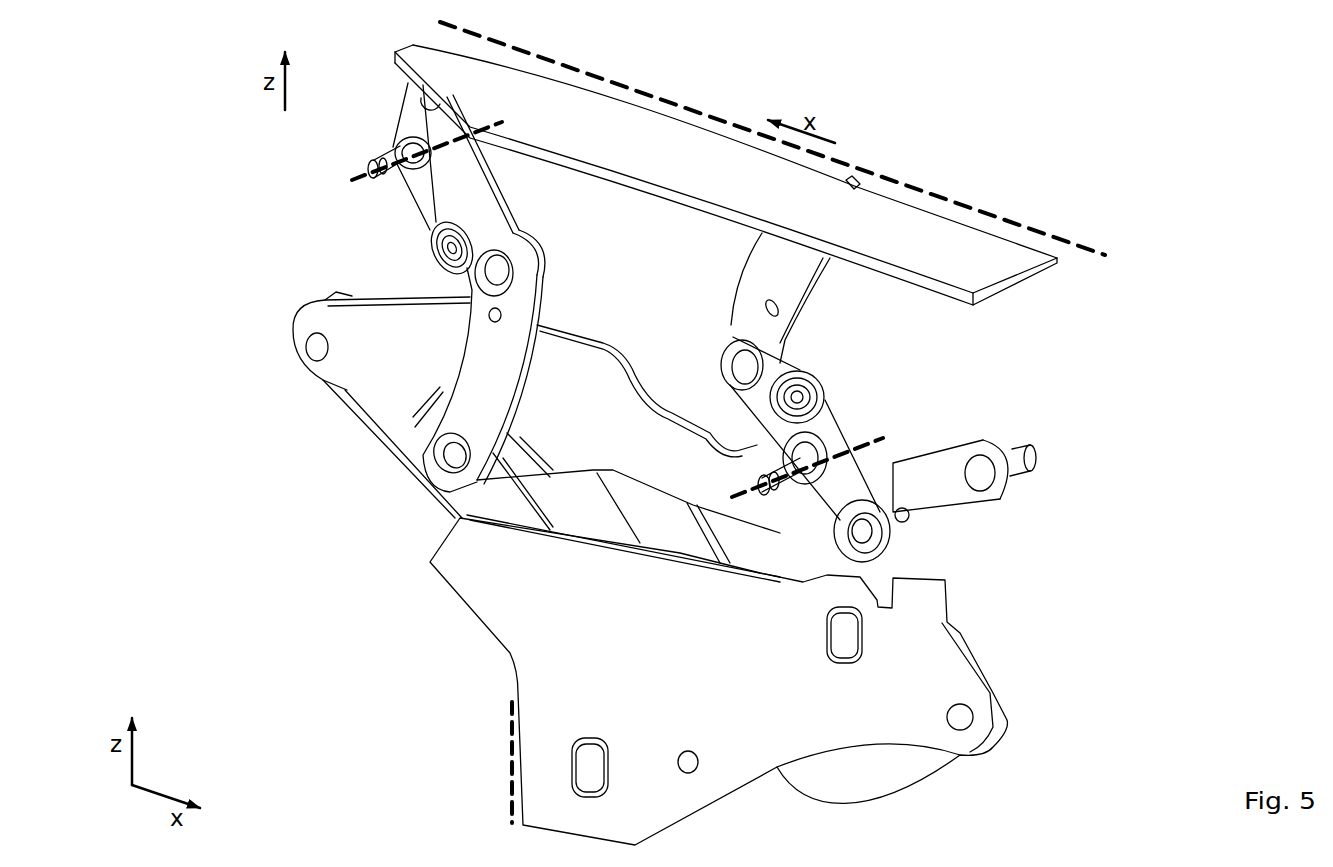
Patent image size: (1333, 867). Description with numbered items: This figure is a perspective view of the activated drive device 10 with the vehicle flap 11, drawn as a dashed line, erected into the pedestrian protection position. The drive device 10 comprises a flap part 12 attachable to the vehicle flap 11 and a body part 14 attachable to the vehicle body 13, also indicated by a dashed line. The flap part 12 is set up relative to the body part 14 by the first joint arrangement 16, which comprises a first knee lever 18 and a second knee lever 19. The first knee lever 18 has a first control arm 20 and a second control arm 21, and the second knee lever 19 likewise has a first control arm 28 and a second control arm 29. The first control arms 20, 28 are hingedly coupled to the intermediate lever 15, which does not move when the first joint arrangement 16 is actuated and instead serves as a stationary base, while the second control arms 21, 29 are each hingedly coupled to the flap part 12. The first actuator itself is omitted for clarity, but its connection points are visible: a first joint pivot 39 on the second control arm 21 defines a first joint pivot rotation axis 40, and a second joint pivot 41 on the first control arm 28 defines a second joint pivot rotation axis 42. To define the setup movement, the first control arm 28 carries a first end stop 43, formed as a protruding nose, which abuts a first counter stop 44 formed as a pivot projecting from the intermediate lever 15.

The drive device 10 is at (165, 121).
The vehicle flap 11 is at (990, 216).
The flap part 12 is at (909, 249).
The vehicle body 13 is at (509, 760).
The body part 14 is at (701, 664).
The intermediate lever 15 is at (574, 406).
The first joint arrangement 16 is at (392, 252).
The first knee lever 18 is at (392, 213).
The second knee lever 19 is at (858, 356).
The first control arm 20 is at (501, 396).
The second control arm 21 is at (457, 209).
The first control arm 28 is at (875, 510).
The second control arm 29 is at (793, 282).
The first joint pivot 39 is at (392, 157).
The first joint pivot rotation axis 40 is at (466, 133).
The second joint pivot 41 is at (760, 480).
The second joint pivot rotation axis 42 is at (864, 442).
The first end stop 43 is at (895, 500).
The first counter stop 44 is at (910, 515).